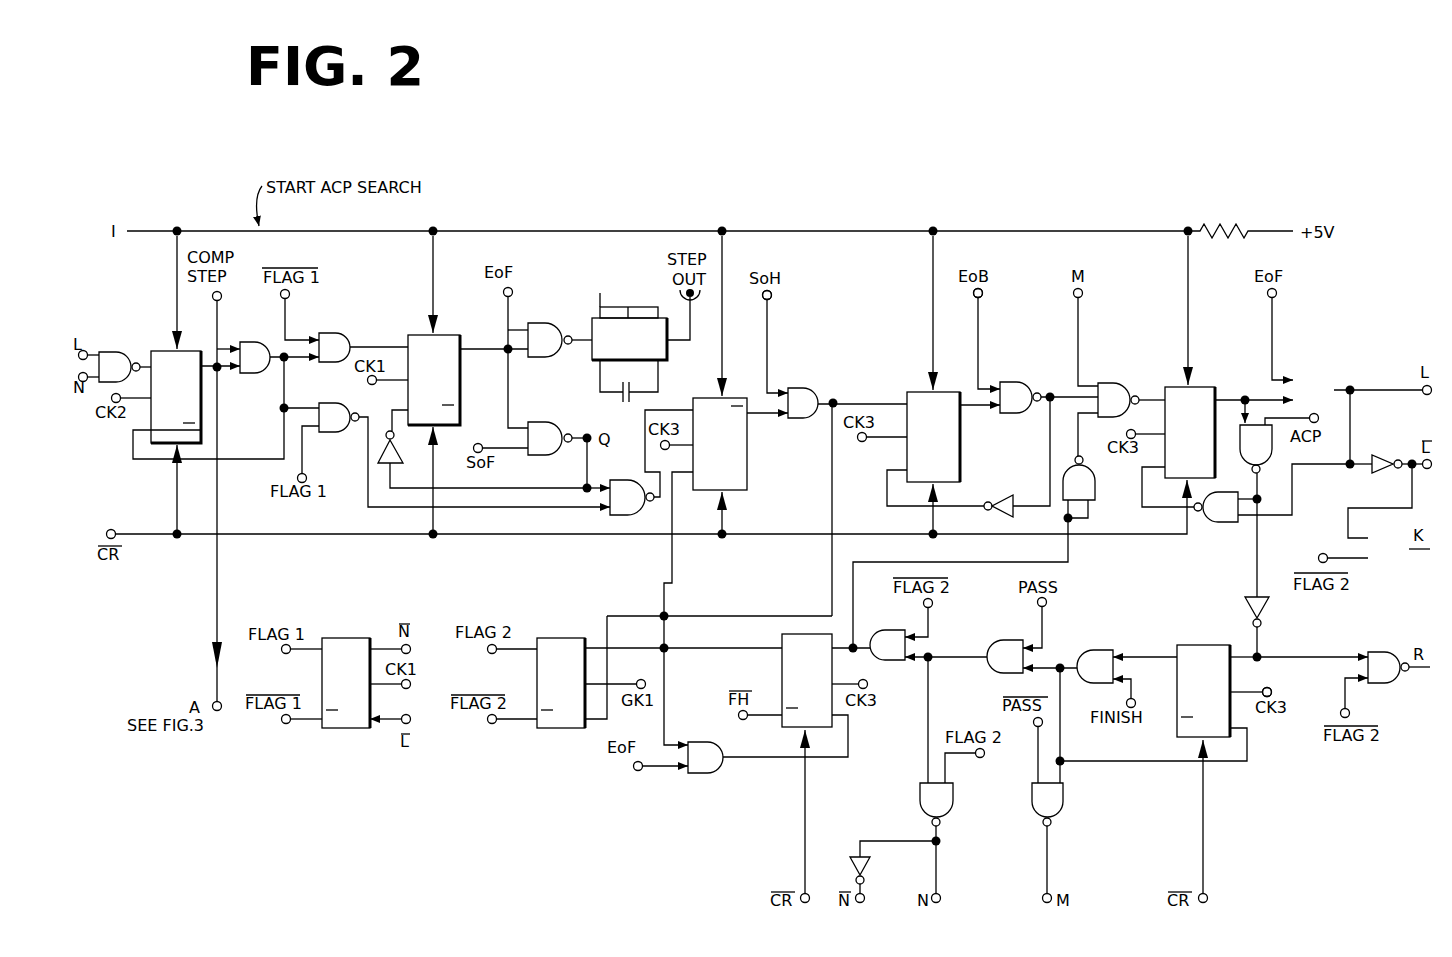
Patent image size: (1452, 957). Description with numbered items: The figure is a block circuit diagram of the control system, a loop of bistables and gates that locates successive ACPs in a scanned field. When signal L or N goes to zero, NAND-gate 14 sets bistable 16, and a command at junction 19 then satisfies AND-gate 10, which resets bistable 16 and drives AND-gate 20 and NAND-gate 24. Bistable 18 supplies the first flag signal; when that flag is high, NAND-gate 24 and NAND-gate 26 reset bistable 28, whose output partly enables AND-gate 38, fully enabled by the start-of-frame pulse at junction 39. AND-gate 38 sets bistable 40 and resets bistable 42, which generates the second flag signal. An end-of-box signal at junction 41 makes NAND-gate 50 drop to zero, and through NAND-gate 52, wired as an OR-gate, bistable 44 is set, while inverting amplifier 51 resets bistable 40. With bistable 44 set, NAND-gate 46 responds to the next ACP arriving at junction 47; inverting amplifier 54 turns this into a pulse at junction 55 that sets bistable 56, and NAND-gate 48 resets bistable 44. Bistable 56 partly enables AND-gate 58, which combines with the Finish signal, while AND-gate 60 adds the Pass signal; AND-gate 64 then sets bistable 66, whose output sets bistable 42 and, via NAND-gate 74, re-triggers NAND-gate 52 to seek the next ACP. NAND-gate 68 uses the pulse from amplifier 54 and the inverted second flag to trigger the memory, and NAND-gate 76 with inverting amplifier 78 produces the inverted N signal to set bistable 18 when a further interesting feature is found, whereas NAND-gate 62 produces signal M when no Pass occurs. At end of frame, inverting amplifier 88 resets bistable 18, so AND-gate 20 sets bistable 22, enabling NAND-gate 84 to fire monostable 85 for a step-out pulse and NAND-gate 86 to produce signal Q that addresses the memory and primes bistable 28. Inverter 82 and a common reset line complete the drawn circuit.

The AND-gate 10 is at (255, 357).
The NAND-gate 14 is at (119, 367).
The bistable 16 is at (176, 397).
The bistable 18 is at (346, 683).
The junction 19 is at (212, 298).
The AND-gate 20 is at (334, 347).
The bistable 22 is at (434, 380).
The NAND-gate 24 is at (339, 417).
The NAND-gate 26 is at (632, 497).
The bistable 28 is at (720, 444).
The AND-gate 38 is at (803, 403).
The junction 39 is at (771, 297).
The bistable 40 is at (933, 437).
The junction 41 is at (982, 295).
The bistable 42 is at (561, 683).
The bistable 44 is at (1190, 432).
The NAND-gate 46 is at (1256, 449).
The junction 47 is at (1318, 417).
The NAND-gate 48 is at (1216, 507).
The NAND-gate 50 is at (1020, 397).
The inverting amplifier 51 is at (1000, 496).
The NAND-gate 52 is at (1118, 400).
The inverting amplifier 54 is at (1263, 612).
The junction 55 is at (1278, 684).
The bistable 56 is at (1203, 691).
The AND-gate 58 is at (1095, 666).
The AND-gate 60 is at (1005, 656).
The NAND-gate 62 is at (1047, 804).
The AND-gate 64 is at (887, 645).
The bistable 66 is at (807, 680).
The NAND-gate 68 is at (1388, 667).
The NAND-gate 74 is at (1079, 478).
The NAND-gate 76 is at (936, 804).
The inverting amplifier 78 is at (866, 866).
The inverter 82 is at (1383, 445).
The NAND-gate 84 is at (550, 340).
The monostable 85 is at (629, 347).
The NAND-gate 86 is at (550, 438).
The inverting amplifier 88 is at (401, 447).